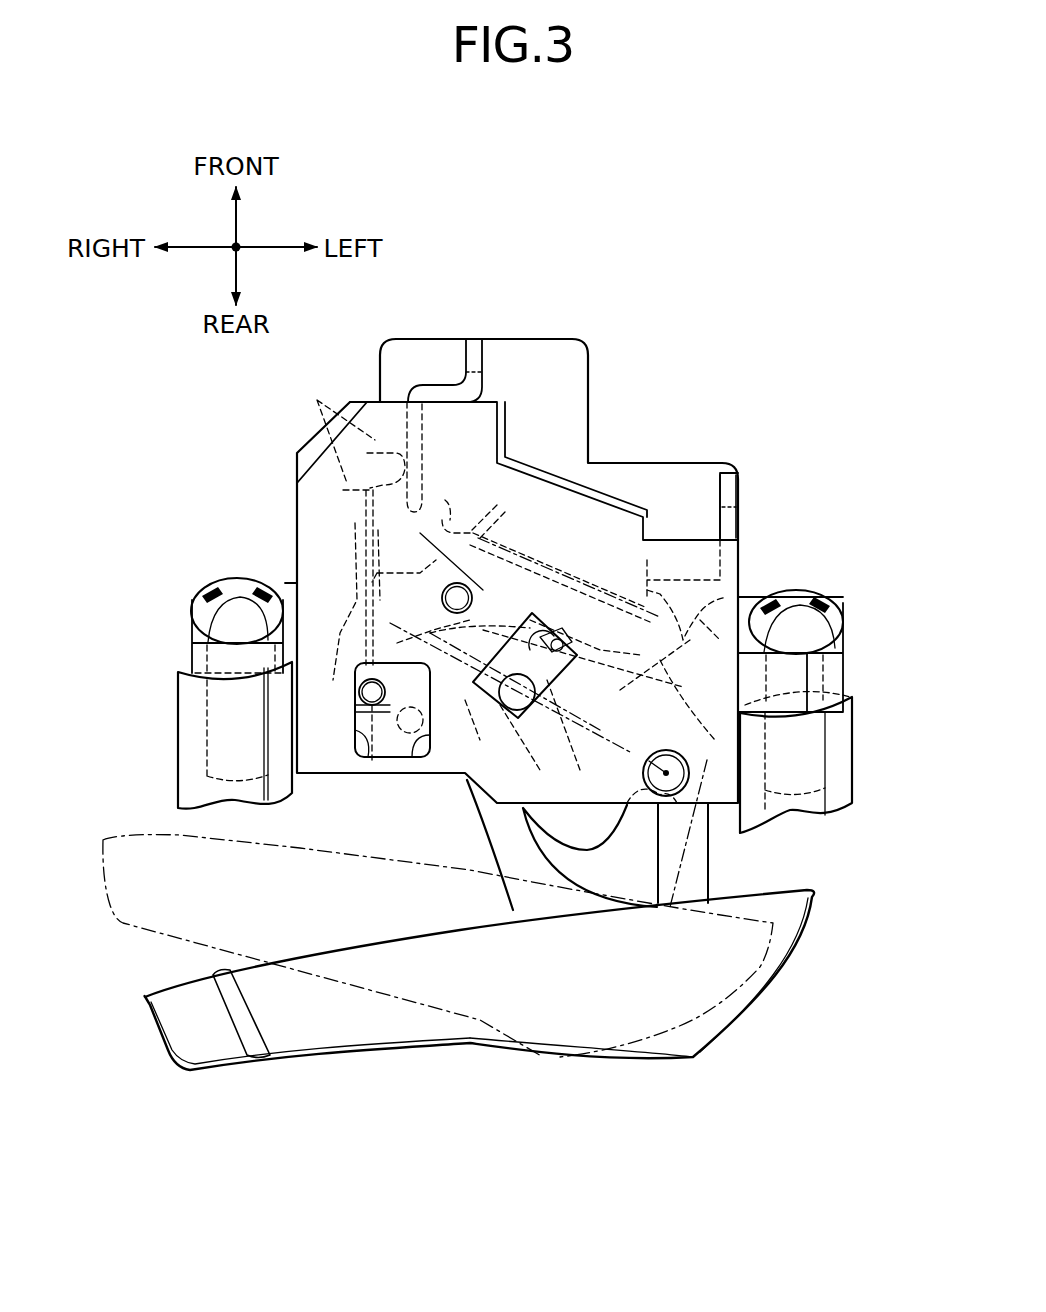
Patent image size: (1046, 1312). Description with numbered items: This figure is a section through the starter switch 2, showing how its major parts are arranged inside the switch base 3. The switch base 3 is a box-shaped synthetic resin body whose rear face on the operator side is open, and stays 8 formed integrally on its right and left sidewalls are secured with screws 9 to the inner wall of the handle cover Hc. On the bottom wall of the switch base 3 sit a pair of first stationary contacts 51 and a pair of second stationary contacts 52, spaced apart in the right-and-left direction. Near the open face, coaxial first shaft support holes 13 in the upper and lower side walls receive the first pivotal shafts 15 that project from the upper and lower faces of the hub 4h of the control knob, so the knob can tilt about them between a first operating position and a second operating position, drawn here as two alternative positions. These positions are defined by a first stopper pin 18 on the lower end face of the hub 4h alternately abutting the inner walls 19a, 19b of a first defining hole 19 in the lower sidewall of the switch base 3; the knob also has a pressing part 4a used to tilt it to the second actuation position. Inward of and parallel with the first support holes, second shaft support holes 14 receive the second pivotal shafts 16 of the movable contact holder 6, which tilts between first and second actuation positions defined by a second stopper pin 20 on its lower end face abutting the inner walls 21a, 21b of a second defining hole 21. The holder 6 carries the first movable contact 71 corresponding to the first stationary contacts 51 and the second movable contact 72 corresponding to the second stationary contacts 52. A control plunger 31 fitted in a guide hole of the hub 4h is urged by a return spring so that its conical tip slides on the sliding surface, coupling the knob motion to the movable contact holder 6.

The starter switch 2 is at (669, 316).
The switch base 3 is at (573, 513).
The pressing part 4a is at (400, 1028).
The hub 4h is at (700, 770).
The movable contact holder 6 is at (442, 520).
The stays 8 is at (195, 655).
The screws 9 is at (237, 600).
The first shaft support holes 13 is at (680, 793).
The second shaft support holes 14 is at (442, 604).
The first pivotal shafts 15 is at (660, 785).
The second pivotal shafts 16 is at (452, 585).
The first stopper pin 18 is at (545, 690).
The first defining hole 19 is at (519, 631).
The inner wall of first defining hole 19a is at (497, 705).
The inner wall of first defining hole 19b is at (565, 647).
The second stopper pin 20 is at (374, 700).
The second defining hole 21 is at (432, 680).
The inner wall of second defining hole 21a is at (365, 757).
The inner wall of second defining hole 21b is at (410, 740).
The control plunger 31 is at (487, 532).
The first stationary contacts 51 is at (433, 392).
The second stationary contacts 52 is at (730, 520).
The first movable contact 71 is at (340, 452).
The second movable contact 72 is at (745, 640).
The handle cover Hc is at (190, 750).